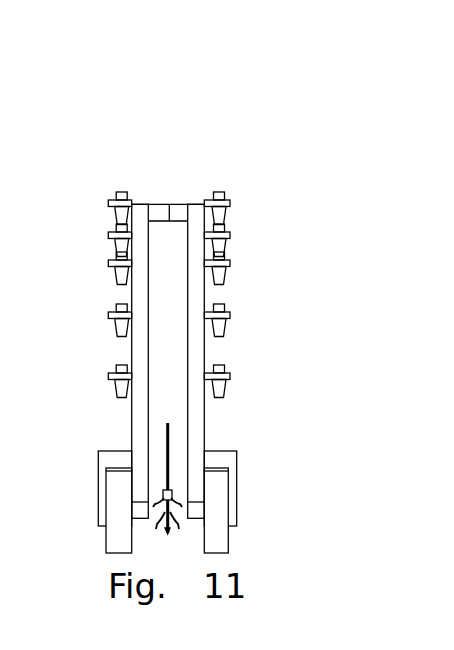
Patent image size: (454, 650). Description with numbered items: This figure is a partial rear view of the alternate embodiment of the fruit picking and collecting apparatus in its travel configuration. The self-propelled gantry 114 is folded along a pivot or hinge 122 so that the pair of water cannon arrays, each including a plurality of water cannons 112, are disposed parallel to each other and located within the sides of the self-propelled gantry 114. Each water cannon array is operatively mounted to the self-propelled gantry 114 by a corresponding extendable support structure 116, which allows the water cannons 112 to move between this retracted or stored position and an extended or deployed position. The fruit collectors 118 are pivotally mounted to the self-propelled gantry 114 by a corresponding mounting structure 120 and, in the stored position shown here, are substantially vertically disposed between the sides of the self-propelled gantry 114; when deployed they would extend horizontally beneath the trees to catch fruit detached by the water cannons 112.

The water cannon 112 is at (265, 253).
The self-propelled gantry 114 is at (300, 363).
The extendable support structure 116 is at (240, 300).
The fruit collector 118 is at (215, 438).
The mounting structure 120 is at (208, 527).
The pivot or hinge 122 is at (186, 160).